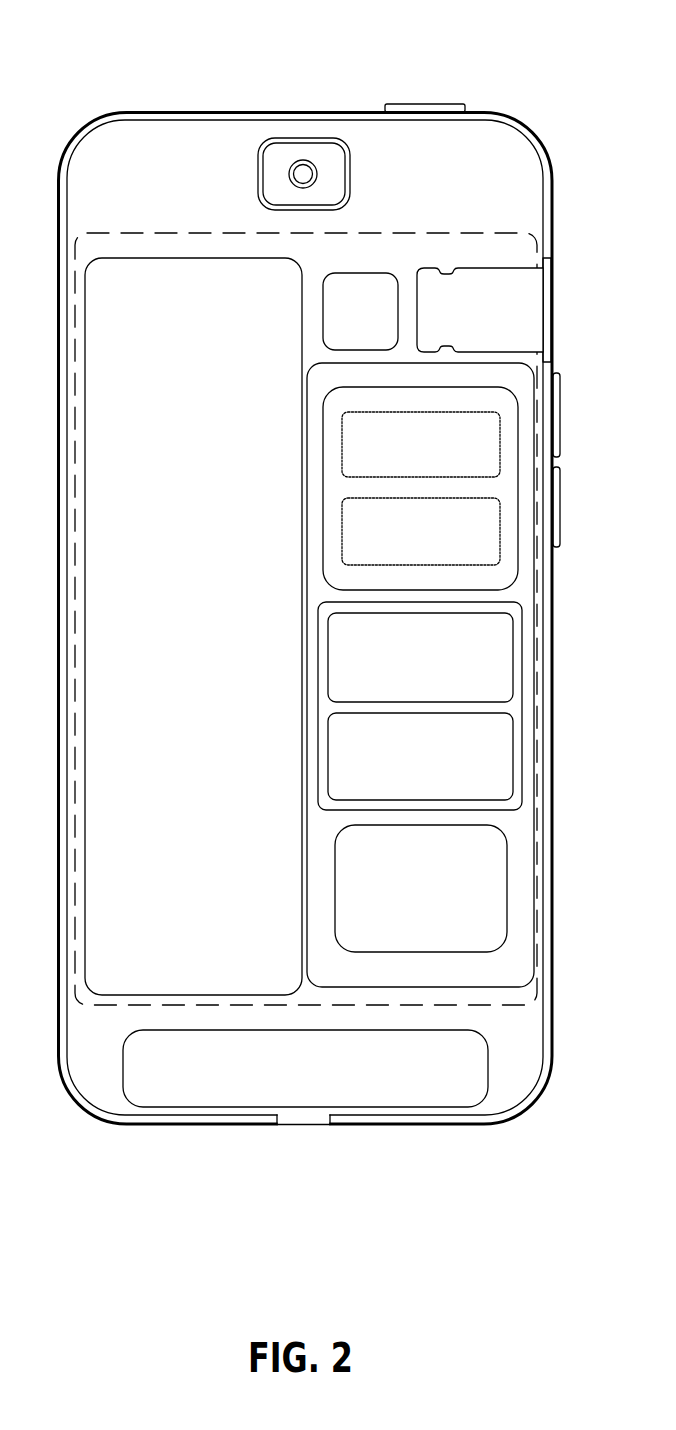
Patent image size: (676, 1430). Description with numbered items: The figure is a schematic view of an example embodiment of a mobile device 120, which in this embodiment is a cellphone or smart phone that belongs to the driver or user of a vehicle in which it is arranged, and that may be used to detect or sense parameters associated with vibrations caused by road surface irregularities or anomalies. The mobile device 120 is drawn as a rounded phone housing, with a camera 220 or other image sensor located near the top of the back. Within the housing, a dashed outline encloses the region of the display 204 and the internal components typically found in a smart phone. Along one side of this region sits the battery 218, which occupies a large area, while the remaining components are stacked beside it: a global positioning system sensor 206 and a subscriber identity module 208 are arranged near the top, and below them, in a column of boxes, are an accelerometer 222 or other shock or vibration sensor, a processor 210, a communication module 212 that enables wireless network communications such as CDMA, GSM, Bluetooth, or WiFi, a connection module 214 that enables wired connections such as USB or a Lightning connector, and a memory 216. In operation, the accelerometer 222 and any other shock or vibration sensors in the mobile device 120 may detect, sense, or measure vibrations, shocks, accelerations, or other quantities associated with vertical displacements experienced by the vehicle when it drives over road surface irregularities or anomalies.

The mobile device 120 is at (155, 111).
The camera 220 is at (258, 175).
The display 204 is at (317, 1007).
The global positioning system (GPS) sensor 206 is at (383, 326).
The subscriber identity module (SIM) 208 is at (501, 326).
The accelerometer 222 is at (443, 461).
The processor 210 is at (443, 547).
The communication module 212 is at (443, 671).
The connection module 214 is at (443, 772).
The memory 216 is at (443, 899).
The battery 218 is at (216, 622).